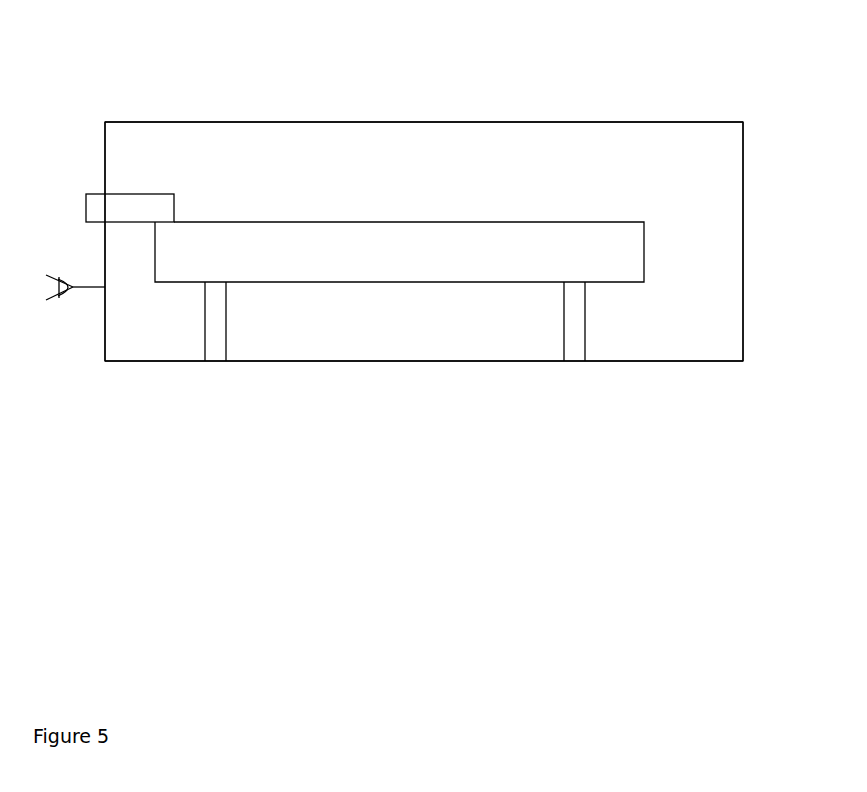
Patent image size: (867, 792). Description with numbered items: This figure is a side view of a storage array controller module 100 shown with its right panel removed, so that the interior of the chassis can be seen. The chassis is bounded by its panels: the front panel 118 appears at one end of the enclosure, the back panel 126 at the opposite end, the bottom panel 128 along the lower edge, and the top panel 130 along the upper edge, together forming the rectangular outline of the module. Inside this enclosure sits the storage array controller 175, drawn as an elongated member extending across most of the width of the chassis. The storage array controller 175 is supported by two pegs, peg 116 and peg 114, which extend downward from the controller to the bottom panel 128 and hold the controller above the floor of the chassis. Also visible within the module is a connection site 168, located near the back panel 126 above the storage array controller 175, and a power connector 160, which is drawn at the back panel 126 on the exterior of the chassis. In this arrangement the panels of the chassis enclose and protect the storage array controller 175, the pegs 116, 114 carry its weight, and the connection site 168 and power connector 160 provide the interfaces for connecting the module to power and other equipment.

The storage array controller module 100 is at (743, 330).
The peg 114 is at (573, 340).
The peg 116 is at (215, 342).
The front panel 118 is at (743, 192).
The back panel 126 is at (106, 352).
The bottom panel 128 is at (395, 362).
The top panel 130 is at (284, 122).
The power connector 160 is at (81, 291).
The connection site 168 is at (115, 203).
The storage array controller 175 is at (453, 242).